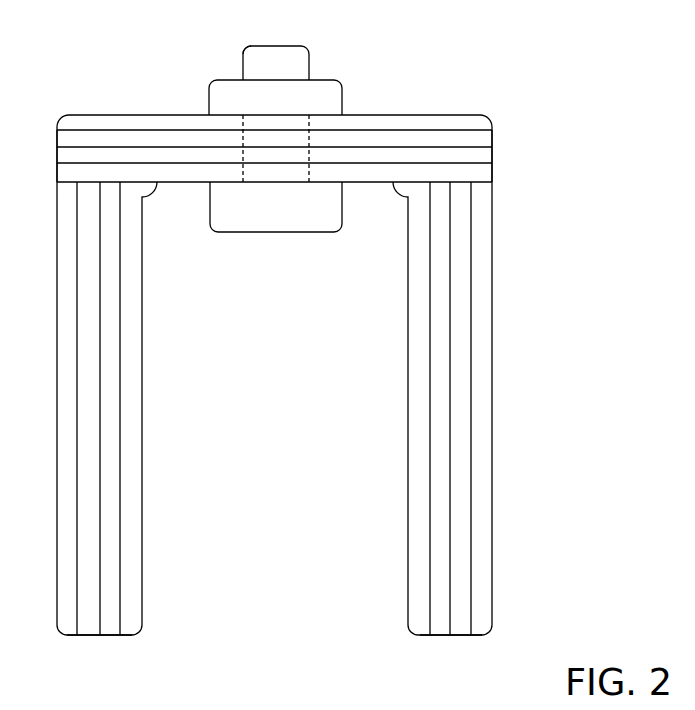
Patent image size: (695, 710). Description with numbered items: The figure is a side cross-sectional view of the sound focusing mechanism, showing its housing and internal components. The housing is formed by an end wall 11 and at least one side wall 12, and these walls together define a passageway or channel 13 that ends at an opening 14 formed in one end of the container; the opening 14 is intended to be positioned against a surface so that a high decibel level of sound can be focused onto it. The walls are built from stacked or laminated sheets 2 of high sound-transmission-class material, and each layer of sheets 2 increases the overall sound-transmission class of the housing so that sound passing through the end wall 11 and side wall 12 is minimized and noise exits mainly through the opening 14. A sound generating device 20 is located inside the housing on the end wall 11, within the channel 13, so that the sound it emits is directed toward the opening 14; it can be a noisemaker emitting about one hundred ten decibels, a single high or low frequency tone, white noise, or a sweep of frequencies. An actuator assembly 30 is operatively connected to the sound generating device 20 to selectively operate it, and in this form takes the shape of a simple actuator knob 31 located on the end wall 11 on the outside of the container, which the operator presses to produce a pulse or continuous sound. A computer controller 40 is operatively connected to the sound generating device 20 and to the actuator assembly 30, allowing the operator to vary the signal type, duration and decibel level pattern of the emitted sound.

The sheets 2 is at (73, 173).
The end wall 11 is at (403, 110).
The side wall 12 is at (499, 352).
The channel 13 is at (382, 310).
The opening 14 is at (259, 600).
The sound generating device 20 is at (258, 218).
The actuator assembly 30 is at (280, 35).
The actuator knob 31 is at (247, 56).
The computer controller 40 is at (323, 93).